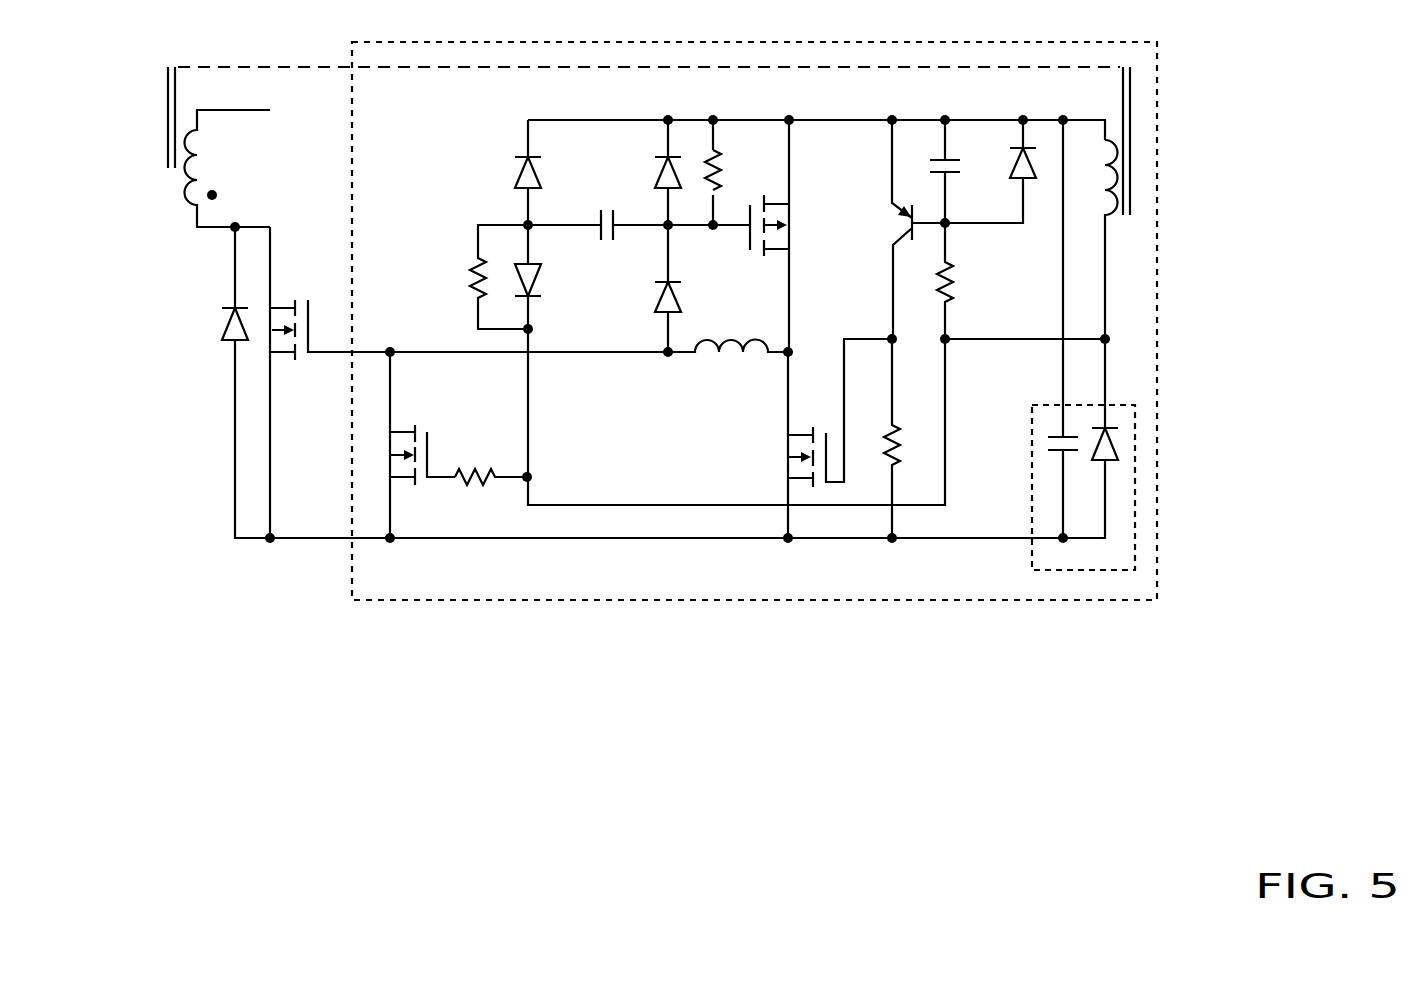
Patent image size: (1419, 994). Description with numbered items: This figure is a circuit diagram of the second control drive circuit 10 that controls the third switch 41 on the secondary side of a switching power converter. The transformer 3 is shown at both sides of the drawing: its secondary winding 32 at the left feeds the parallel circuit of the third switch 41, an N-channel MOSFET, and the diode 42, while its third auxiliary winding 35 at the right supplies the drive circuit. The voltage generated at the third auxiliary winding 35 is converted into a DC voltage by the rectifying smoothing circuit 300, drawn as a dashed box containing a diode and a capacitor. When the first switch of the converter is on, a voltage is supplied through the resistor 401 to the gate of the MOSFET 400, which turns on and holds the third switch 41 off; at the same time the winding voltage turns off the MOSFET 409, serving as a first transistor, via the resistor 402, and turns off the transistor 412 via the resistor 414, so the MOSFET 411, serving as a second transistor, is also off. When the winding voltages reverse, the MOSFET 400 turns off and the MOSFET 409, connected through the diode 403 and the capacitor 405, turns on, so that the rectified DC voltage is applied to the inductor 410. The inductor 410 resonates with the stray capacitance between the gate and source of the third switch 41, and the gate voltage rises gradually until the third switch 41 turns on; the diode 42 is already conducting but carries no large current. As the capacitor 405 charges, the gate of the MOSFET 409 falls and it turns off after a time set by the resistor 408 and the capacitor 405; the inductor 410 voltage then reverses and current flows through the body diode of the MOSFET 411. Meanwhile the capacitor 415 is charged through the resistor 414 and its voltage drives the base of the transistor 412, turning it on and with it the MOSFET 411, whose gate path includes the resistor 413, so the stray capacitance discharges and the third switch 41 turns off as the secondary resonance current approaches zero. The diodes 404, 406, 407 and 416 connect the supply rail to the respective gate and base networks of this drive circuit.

The transformer 3 is at (178, 66).
The second control drive circuit 10 is at (352, 130).
The secondary winding 32 is at (200, 170).
The third auxiliary winding 35 is at (1100, 178).
The third switch 41 is at (285, 360).
The diode 42 is at (229, 345).
The rectifying smoothing circuit 300 is at (1046, 405).
The MOSFET 400 is at (400, 482).
The resistor 401 is at (490, 488).
The resistor 402 is at (470, 274).
The diode 403 is at (518, 258).
The diode 404 is at (518, 172).
The capacitor 405 is at (605, 240).
The diode 406 is at (657, 167).
The diode 407 is at (678, 285).
The resistor 408 is at (720, 162).
The MOSFET 409 is at (785, 240).
The inductor 410 is at (703, 355).
The MOSFET 411 is at (786, 448).
The transistor 412 is at (893, 228).
The resistor 413 is at (900, 448).
The resistor 414 is at (955, 290).
The capacitor 415 is at (930, 153).
The diode 416 is at (1012, 160).